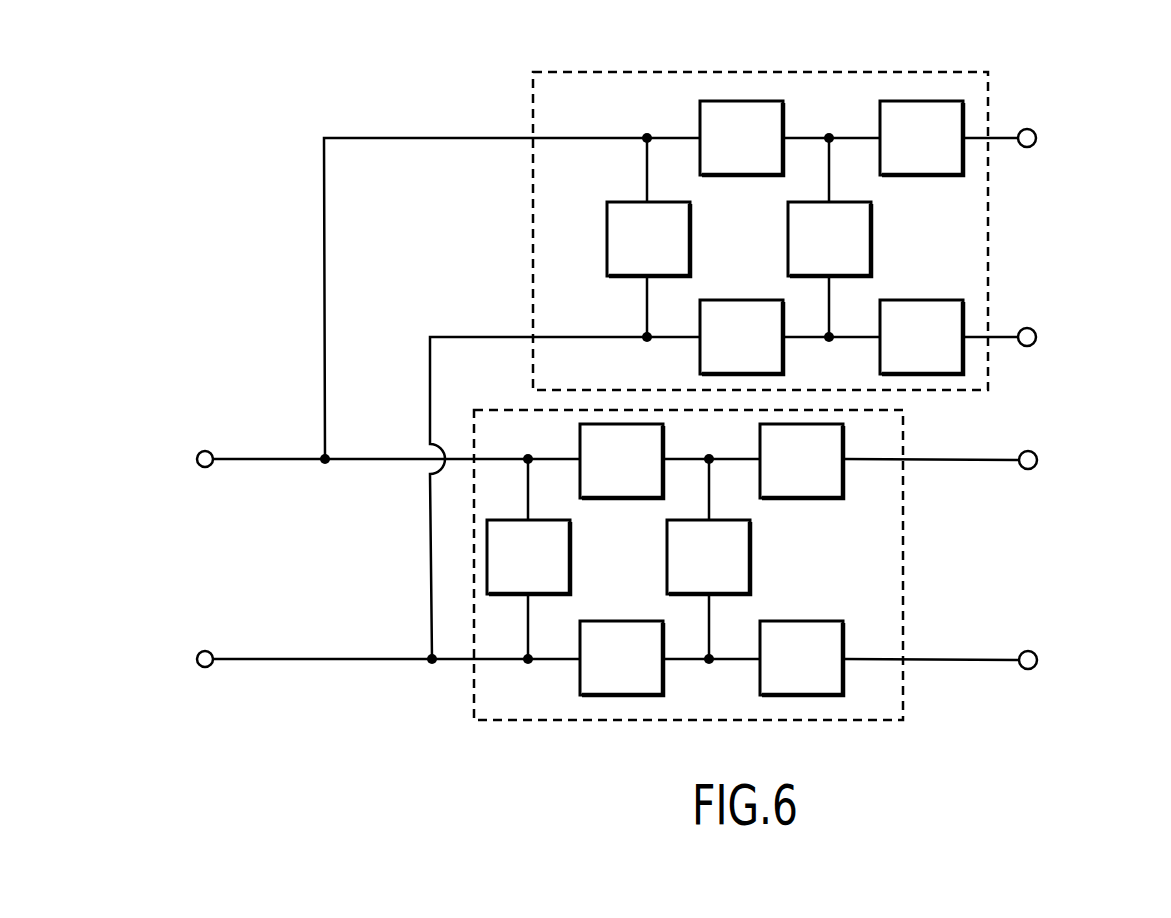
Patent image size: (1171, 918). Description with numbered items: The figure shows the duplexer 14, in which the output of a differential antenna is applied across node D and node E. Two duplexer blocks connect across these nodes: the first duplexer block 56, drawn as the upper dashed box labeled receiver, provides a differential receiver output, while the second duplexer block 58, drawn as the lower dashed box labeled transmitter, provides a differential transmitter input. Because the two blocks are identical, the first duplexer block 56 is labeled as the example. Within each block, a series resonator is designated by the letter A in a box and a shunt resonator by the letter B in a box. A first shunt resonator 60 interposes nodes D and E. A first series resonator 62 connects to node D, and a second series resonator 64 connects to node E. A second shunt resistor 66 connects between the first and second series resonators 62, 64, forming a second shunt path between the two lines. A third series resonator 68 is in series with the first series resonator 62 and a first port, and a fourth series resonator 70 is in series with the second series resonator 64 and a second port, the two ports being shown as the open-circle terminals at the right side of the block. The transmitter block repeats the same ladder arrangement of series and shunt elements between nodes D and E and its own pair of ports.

The duplexer 14 is at (264, 272).
The first duplexer block 56 is at (533, 306).
The second duplexer block 58 is at (474, 720).
The first shunt resonator 60 is at (607, 238).
The first series resonator 62 is at (740, 101).
The second series resonator 64 is at (700, 360).
The second shunt resistor 66 is at (870, 240).
The third series resonator 68 is at (918, 101).
The fourth series resonator 70 is at (963, 373).